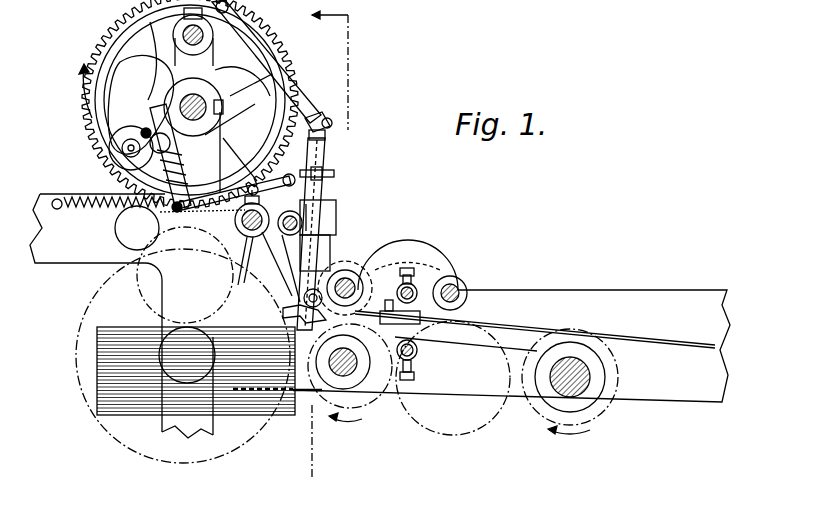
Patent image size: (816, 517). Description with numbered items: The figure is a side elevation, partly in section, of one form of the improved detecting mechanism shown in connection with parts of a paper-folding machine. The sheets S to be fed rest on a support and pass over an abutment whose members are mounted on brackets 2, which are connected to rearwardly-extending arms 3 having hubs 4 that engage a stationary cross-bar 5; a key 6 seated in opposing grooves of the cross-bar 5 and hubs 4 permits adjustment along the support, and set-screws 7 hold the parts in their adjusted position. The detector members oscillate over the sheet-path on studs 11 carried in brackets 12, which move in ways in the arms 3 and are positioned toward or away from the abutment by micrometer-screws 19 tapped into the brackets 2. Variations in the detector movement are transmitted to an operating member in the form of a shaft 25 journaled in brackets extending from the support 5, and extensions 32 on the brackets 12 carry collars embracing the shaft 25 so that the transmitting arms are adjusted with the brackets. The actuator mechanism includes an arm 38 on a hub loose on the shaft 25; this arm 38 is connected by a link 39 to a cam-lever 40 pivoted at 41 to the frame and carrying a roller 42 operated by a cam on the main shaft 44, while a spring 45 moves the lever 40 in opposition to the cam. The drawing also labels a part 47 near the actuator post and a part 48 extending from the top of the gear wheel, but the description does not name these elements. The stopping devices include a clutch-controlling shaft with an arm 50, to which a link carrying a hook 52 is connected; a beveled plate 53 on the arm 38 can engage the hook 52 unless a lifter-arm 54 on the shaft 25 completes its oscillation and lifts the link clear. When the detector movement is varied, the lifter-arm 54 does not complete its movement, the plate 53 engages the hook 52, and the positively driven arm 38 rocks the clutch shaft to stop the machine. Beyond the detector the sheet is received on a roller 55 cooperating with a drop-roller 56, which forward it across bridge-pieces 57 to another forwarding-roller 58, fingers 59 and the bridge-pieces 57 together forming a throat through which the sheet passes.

The bracket 2 is at (333, 242).
The rearwardly-extending arm 3 is at (277, 264).
The hub 4 is at (225, 214).
The cross-bar 5 is at (245, 262).
The key 6 is at (240, 229).
The set-screw 7 is at (262, 168).
The stud 11 is at (296, 307).
The bracket 12 is at (315, 253).
The micrometer-screw 19 is at (322, 193).
The shaft 25 is at (284, 234).
The extension 32 is at (322, 213).
The arm 38 is at (321, 153).
The link 39 is at (250, 194).
The cam-lever 40 is at (177, 157).
The pivot 41 is at (170, 143).
The roller 42 is at (142, 86).
The shaft 44 is at (222, 125).
The spring 45 is at (97, 260).
The pinion 47 is at (313, 288).
The connecting bar 48 is at (218, 62).
The arm 50 is at (511, 378).
The hook 52 is at (330, 121).
The beveled plate 53 is at (325, 136).
The lifter-arm 54 is at (305, 117).
The roller 55 is at (360, 384).
The drop-roller 56 is at (340, 262).
The bridge-piece 57 is at (497, 340).
The forwarding-roller 58 is at (597, 378).
The finger 59 is at (537, 328).
The sheets S is at (185, 334).